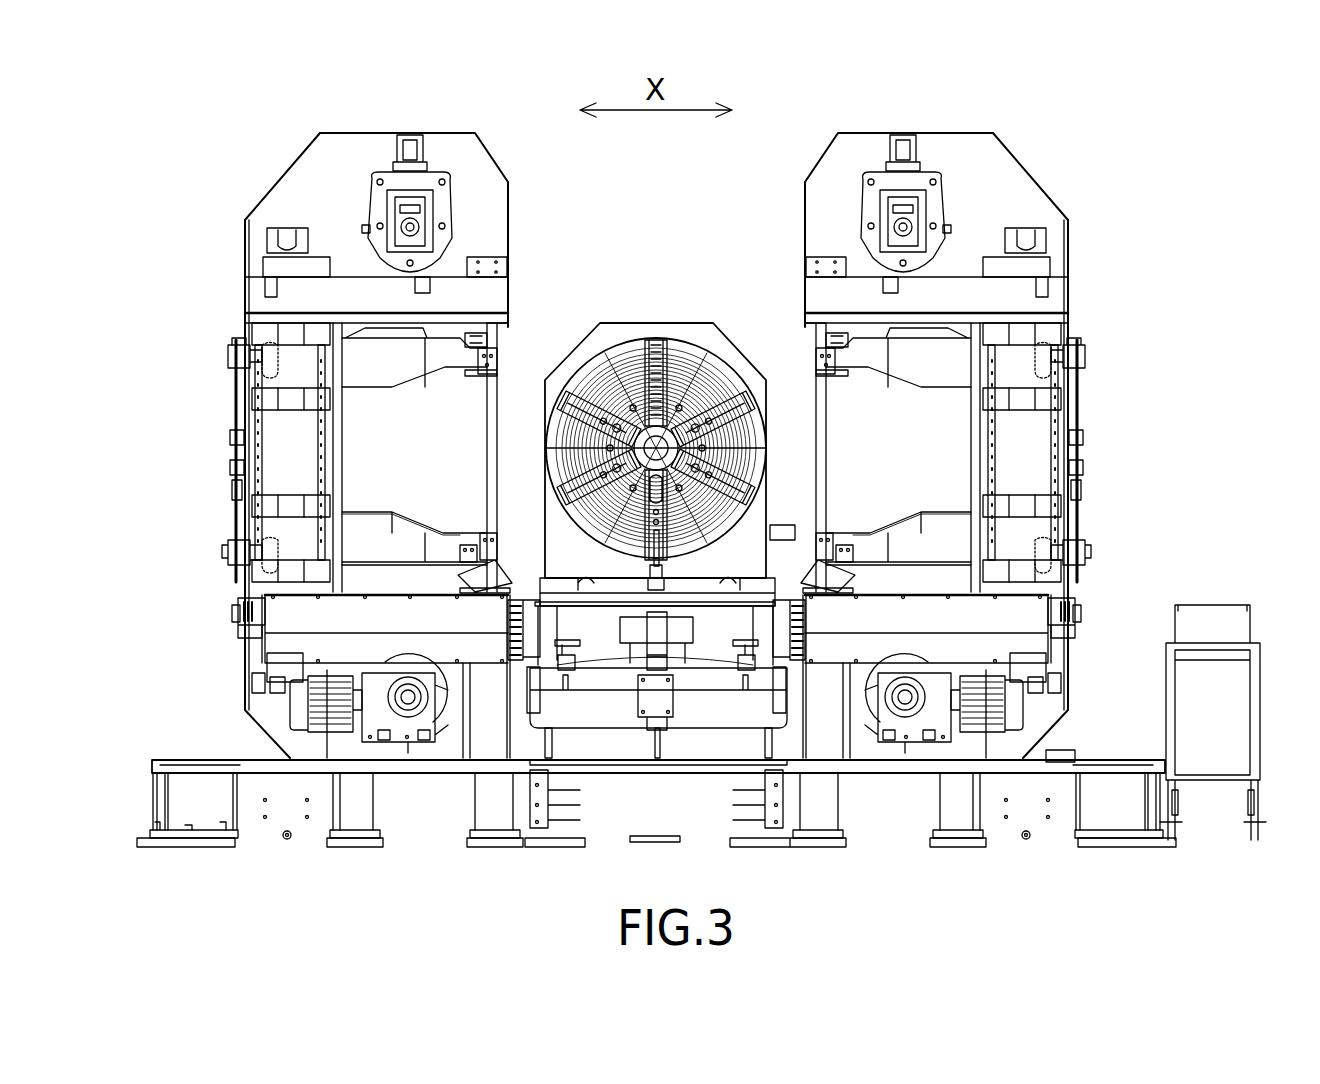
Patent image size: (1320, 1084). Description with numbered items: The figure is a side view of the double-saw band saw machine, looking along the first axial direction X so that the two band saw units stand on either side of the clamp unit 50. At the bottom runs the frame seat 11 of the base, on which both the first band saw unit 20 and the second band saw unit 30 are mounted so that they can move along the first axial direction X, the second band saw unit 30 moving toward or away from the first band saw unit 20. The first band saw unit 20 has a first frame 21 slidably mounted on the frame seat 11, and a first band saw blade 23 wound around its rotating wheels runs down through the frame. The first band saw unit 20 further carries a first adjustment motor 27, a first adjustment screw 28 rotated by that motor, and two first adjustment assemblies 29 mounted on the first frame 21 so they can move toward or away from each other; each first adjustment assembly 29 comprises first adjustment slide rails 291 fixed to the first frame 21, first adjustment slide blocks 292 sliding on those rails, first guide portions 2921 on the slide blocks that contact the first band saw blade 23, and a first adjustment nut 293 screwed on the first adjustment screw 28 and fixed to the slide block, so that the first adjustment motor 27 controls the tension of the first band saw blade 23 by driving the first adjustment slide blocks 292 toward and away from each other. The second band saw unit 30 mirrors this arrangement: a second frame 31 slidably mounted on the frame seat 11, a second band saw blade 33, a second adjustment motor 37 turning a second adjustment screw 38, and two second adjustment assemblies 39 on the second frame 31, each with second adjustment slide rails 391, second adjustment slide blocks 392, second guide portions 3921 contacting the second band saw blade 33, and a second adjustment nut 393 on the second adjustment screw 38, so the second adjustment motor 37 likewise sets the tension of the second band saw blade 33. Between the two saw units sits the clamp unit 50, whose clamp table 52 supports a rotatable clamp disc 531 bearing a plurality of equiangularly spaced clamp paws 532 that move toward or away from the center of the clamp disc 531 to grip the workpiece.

The frame seat 11 is at (1052, 706).
The first band saw unit 20 is at (1073, 292).
The first frame 21 is at (941, 290).
The first band saw blade 23 is at (816, 452).
The first adjustment motor 27 is at (1077, 612).
The first adjustment screw 28 is at (1076, 515).
The first adjustment assemblies 29 is at (883, 335).
The first adjustment slide rails 291 is at (1063, 430).
The first adjustment slide blocks 292 is at (915, 362).
The first guide portion 2921 is at (821, 350).
The first adjustment nut 293 is at (1076, 355).
The second band saw unit 30 is at (240, 292).
The second frame 31 is at (372, 290).
The second band saw blade 33 is at (497, 452).
The second adjustment motor 37 is at (238, 612).
The second adjustment screw 38 is at (237, 515).
The second adjustment assemblies 39 is at (430, 335).
The second adjustment slide rails 391 is at (250, 430).
The second adjustment slide blocks 392 is at (398, 362).
The second guide portions 3921 is at (492, 350).
The second adjustment nut 393 is at (237, 355).
The clamp unit 50 is at (665, 325).
The clamp table 52 is at (625, 330).
The clamp disc 531 is at (700, 350).
The clamp paws 532 is at (662, 540).